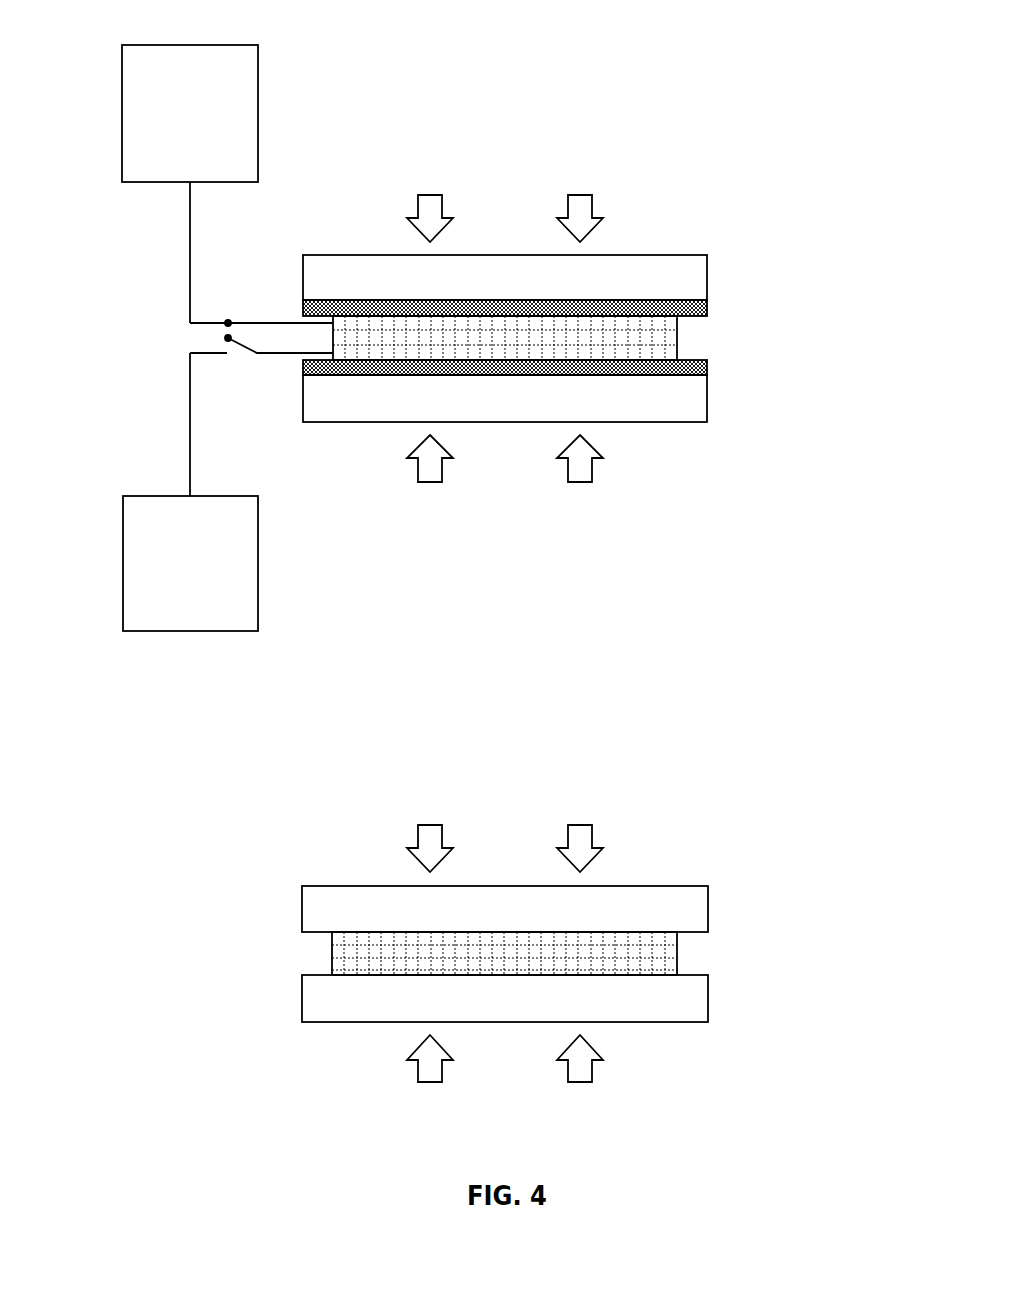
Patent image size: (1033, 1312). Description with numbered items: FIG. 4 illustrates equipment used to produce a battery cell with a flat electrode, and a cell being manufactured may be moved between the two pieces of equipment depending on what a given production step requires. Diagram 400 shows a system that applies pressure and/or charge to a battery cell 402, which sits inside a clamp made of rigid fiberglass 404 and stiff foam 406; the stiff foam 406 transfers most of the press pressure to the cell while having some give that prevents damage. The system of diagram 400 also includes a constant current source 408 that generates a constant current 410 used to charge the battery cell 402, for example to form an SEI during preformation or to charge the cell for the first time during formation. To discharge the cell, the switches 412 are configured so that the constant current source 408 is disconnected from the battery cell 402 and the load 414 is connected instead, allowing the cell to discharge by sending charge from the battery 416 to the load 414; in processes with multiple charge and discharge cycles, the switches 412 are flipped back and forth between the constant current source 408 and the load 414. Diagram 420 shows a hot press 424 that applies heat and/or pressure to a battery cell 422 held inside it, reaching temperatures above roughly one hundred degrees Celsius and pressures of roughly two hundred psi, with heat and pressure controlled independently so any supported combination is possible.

The diagram 400 is at (774, 43).
The battery cell 402 is at (655, 326).
The rigid fiberglass 404 is at (708, 272).
The stiff foam 406 is at (708, 300).
The constant current source 408 is at (122, 113).
The constant current 410 is at (189, 262).
The switches 412 is at (247, 292).
The load 414 is at (122, 565).
The charge from the battery 416 is at (189, 398).
The diagram 420 is at (774, 793).
The battery cell 422 is at (677, 953).
The hot press 424 is at (302, 1000).